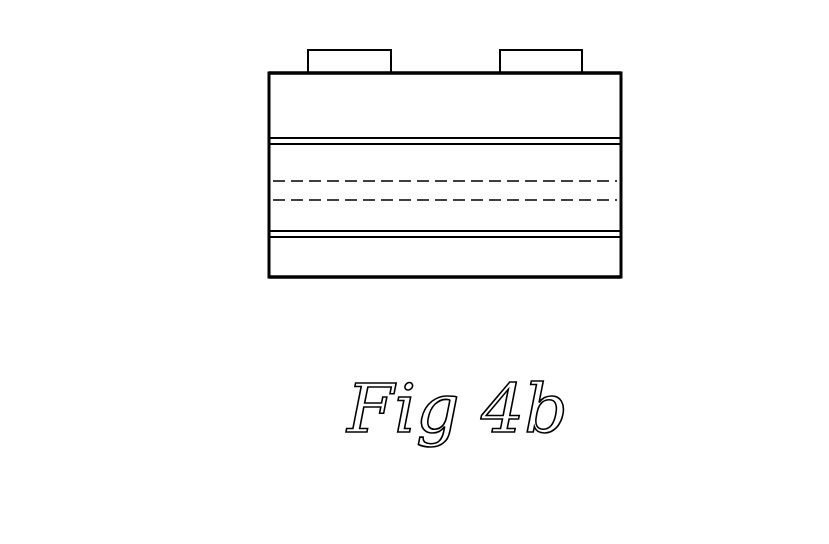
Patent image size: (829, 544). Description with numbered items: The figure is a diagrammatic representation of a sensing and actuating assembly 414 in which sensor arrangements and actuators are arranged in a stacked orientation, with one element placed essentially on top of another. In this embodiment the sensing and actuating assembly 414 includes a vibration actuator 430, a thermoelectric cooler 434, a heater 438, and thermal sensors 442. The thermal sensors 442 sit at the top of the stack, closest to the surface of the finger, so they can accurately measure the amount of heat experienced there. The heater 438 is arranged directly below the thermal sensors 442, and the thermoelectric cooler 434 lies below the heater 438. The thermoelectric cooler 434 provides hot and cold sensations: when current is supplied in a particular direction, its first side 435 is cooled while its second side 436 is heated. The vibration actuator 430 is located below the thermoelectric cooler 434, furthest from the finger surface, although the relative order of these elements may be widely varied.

The sensing and actuating assembly 414 is at (168, 173).
The vibration actuator 430 is at (598, 257).
The thermoelectric cooler 434 is at (650, 172).
The side 435 is at (279, 164).
The side 436 is at (279, 214).
The heater 438 is at (603, 104).
The thermal sensors 442 is at (380, 62).